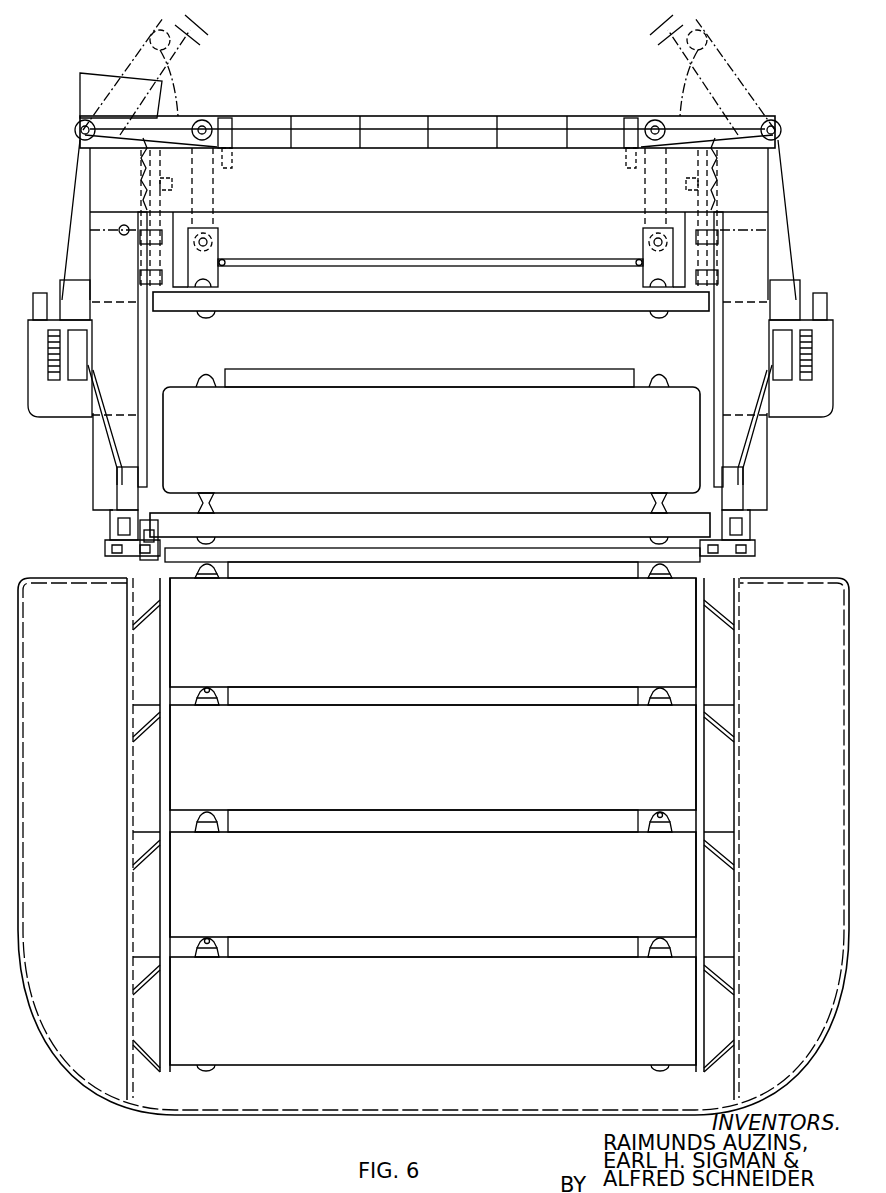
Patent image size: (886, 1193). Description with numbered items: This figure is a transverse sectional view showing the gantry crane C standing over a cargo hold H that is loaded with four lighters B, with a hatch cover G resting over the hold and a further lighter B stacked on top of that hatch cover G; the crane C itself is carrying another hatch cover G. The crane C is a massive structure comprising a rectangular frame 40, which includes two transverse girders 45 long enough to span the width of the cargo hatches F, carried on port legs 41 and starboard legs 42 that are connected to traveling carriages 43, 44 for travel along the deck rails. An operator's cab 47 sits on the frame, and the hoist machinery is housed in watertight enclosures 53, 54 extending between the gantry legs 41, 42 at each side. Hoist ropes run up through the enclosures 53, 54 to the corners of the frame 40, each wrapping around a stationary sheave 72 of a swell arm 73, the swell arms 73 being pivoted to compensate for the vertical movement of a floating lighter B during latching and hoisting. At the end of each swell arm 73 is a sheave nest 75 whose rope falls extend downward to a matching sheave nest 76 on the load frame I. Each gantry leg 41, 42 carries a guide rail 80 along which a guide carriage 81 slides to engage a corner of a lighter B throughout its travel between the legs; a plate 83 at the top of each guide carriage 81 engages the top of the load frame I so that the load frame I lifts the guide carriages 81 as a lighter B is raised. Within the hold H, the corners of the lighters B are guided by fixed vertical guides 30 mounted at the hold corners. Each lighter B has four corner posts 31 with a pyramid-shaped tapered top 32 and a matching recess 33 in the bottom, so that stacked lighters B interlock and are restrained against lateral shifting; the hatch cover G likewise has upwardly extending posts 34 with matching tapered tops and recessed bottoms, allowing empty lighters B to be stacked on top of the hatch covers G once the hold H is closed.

The fixed vertical guides 30 is at (158, 650).
The corner posts 31 is at (207, 390).
The tapered top 32 is at (210, 375).
The matching recess 33 is at (210, 690).
The upwardly extending posts 34 is at (210, 285).
The rectangular frame 40 is at (512, 146).
The port legs 41 is at (85, 258).
The starboard legs 42 is at (780, 248).
The traveling carriage 43 is at (110, 521).
The traveling carriage 44 is at (752, 530).
The transverse girders 45 is at (336, 147).
The operator's cab 47 is at (107, 73).
The hoist machinery enclosure 53 is at (62, 418).
The hoist machinery enclosure 54 is at (795, 420).
The stationary sheave 72 is at (78, 126).
The swell arm 73 is at (178, 118).
The sheave nest 75 is at (172, 50).
The sheave nest 76 is at (222, 240).
The guide rail 80 is at (148, 345).
The guide carriage 81 is at (150, 255).
The plate 83 is at (157, 180).
The lighter B is at (418, 410).
The gantry crane C is at (443, 93).
The cargo hatch F is at (148, 526).
The hatch cover G is at (502, 314).
The cargo hold H is at (688, 698).
The load frame I is at (465, 256).